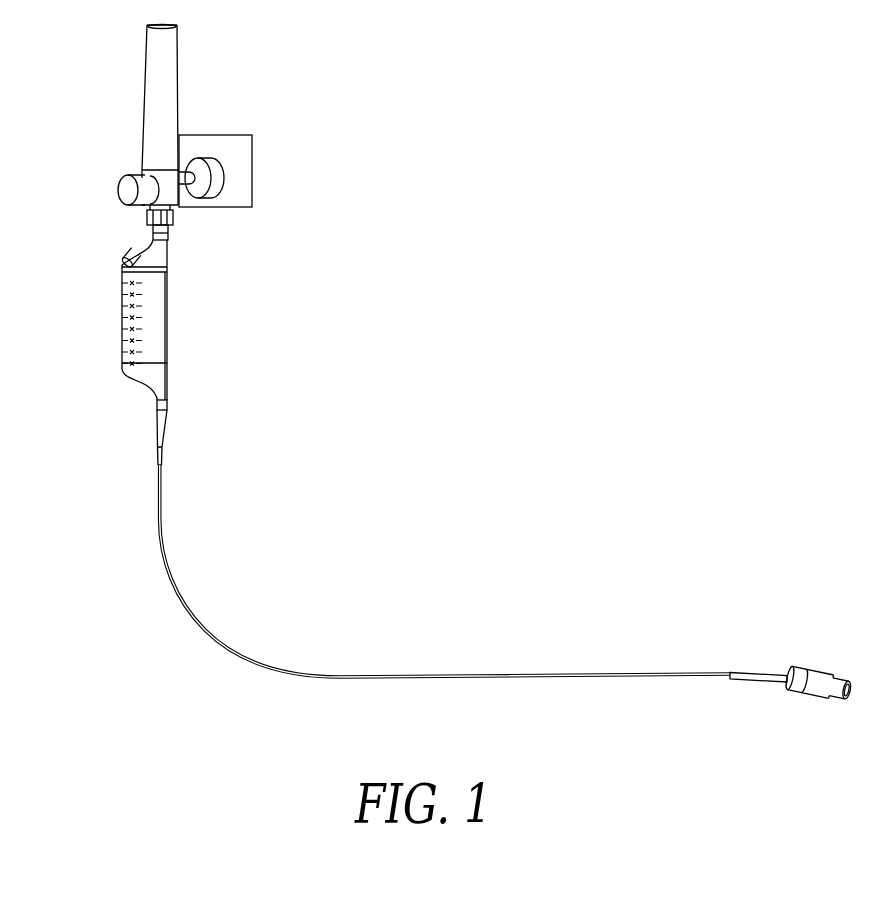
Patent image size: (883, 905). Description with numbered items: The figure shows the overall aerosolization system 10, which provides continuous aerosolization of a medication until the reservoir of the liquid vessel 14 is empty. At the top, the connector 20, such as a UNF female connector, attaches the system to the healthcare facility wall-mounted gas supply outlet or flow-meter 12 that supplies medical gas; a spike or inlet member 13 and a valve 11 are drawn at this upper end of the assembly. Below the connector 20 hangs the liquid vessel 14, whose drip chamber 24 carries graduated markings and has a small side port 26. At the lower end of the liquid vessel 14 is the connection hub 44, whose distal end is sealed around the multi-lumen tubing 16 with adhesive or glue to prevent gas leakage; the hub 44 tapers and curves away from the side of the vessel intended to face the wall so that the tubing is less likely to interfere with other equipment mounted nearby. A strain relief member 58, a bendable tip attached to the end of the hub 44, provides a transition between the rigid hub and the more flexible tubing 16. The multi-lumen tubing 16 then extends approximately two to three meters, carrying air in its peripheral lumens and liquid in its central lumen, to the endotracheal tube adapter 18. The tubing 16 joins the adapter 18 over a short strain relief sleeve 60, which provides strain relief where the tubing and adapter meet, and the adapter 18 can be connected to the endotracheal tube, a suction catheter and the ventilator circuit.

The system 10 is at (67, 207).
The valve 11 is at (126, 182).
The gas supply outlet 12 is at (238, 146).
The spike 13 is at (168, 53).
The liquid vessel 14 is at (186, 270).
The multi-lumen tubing 16 is at (258, 670).
The endotracheal tube adapter 18 is at (836, 670).
The connector 20 is at (175, 220).
The drip chamber 24 is at (170, 316).
The port 26 is at (128, 244).
The connection hub 44 is at (166, 420).
The strain relief member 58 is at (163, 455).
The strain relief sleeve 60 is at (737, 672).